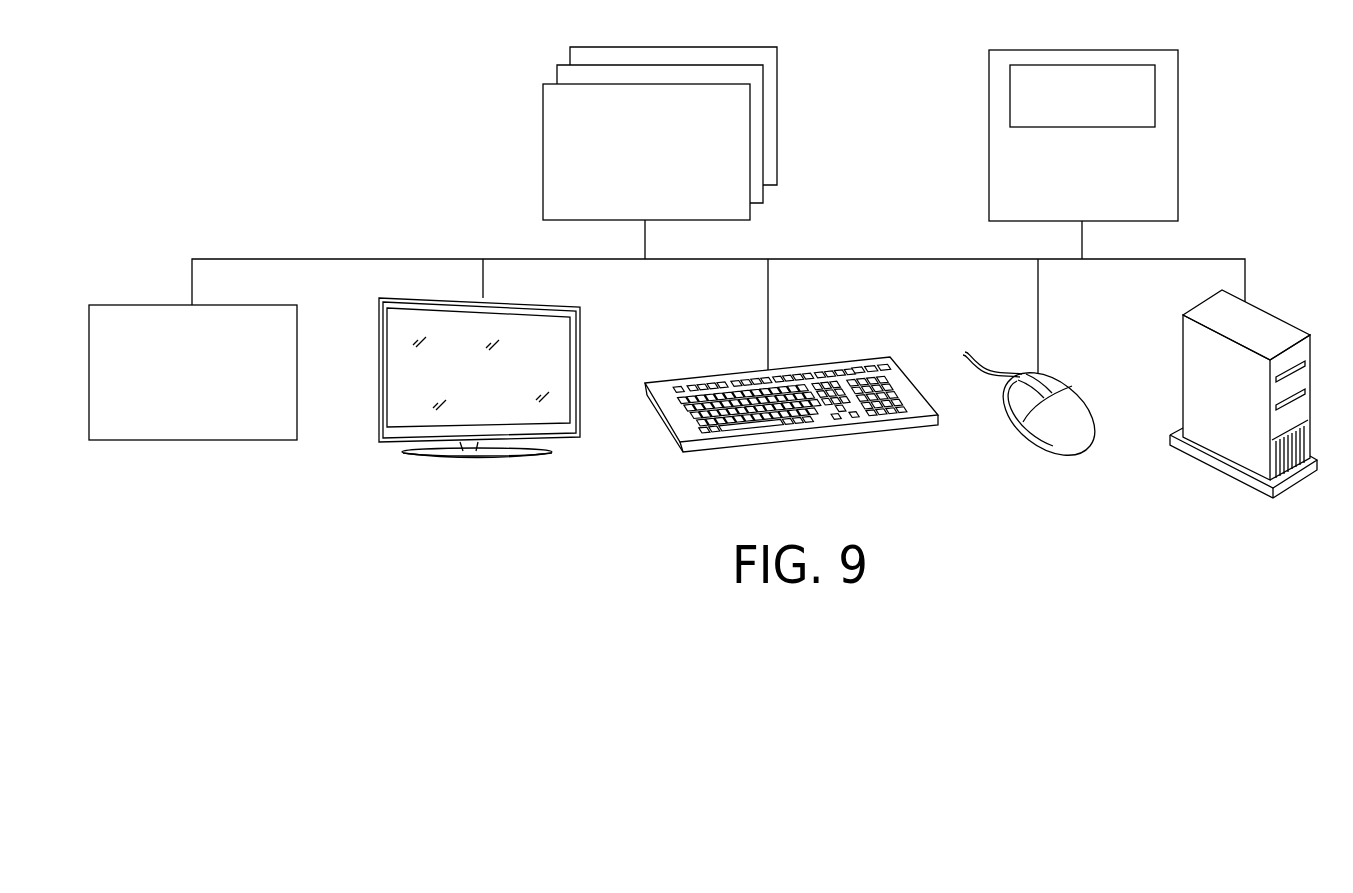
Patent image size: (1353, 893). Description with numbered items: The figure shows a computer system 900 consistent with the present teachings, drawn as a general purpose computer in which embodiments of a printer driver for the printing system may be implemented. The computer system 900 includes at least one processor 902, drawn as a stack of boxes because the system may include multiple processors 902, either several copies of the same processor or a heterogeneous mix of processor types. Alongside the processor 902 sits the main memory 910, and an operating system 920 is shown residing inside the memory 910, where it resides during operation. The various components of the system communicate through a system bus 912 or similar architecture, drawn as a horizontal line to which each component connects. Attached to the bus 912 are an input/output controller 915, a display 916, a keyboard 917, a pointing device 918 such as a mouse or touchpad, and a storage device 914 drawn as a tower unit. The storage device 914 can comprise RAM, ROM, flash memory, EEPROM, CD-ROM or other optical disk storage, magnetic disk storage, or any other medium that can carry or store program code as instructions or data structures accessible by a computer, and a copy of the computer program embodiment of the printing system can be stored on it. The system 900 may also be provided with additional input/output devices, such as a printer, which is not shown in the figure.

The computer system 900 is at (355, 86).
The processor 902 is at (543, 134).
The main memory 910 is at (1072, 135).
The operating system 920 is at (1155, 97).
The system bus 912 is at (239, 256).
The storage device 914 is at (1275, 315).
The input/output controller 915 is at (141, 305).
The display 916 is at (580, 348).
The keyboard 917 is at (832, 360).
The pointing device 918 is at (1063, 382).